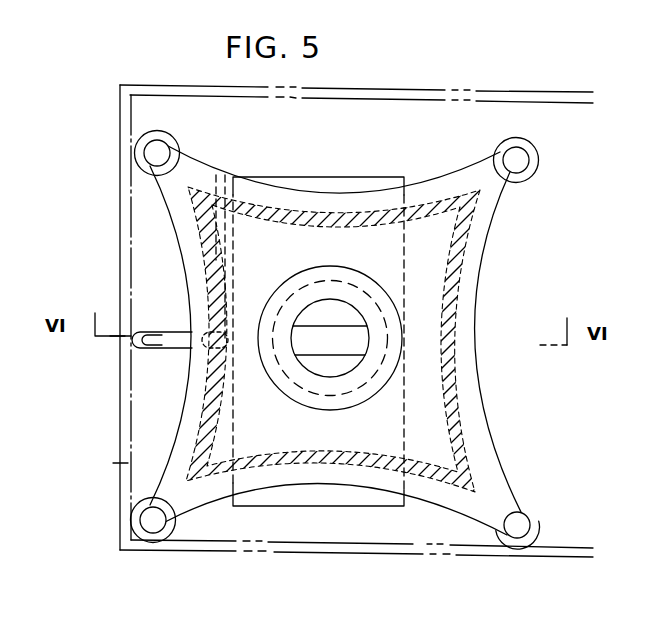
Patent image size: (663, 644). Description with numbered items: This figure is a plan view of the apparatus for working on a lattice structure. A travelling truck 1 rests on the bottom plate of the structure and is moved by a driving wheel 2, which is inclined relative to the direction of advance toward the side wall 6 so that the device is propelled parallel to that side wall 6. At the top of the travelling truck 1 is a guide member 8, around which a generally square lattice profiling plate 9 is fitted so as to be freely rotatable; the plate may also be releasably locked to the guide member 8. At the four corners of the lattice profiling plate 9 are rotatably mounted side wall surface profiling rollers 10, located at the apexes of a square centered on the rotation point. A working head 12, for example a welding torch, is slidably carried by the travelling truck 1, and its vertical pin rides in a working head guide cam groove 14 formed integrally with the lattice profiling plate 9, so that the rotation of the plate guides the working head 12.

The travelling truck 1 is at (358, 497).
The driving wheel 2 is at (205, 376).
The side wall 6 is at (120, 500).
The guide member 8 is at (395, 327).
The lattice profiling plate 9 is at (474, 410).
The side wall surface profiling rollers 10 is at (533, 151).
The working head 12 is at (160, 340).
The working head guide cam groove 14 is at (298, 458).